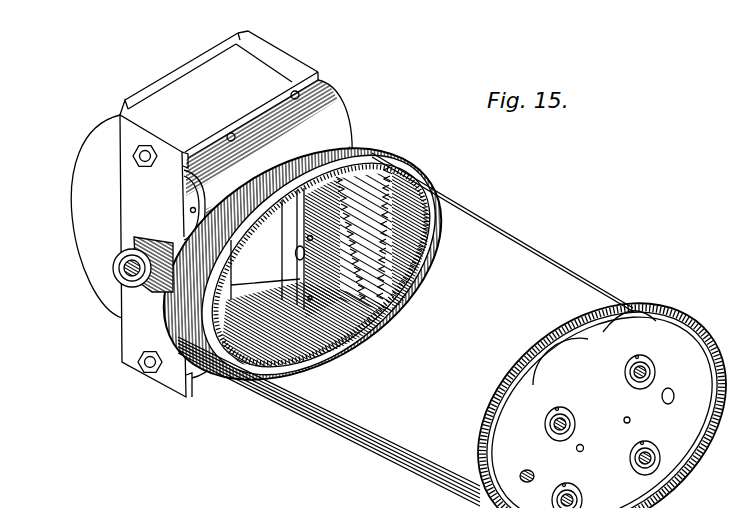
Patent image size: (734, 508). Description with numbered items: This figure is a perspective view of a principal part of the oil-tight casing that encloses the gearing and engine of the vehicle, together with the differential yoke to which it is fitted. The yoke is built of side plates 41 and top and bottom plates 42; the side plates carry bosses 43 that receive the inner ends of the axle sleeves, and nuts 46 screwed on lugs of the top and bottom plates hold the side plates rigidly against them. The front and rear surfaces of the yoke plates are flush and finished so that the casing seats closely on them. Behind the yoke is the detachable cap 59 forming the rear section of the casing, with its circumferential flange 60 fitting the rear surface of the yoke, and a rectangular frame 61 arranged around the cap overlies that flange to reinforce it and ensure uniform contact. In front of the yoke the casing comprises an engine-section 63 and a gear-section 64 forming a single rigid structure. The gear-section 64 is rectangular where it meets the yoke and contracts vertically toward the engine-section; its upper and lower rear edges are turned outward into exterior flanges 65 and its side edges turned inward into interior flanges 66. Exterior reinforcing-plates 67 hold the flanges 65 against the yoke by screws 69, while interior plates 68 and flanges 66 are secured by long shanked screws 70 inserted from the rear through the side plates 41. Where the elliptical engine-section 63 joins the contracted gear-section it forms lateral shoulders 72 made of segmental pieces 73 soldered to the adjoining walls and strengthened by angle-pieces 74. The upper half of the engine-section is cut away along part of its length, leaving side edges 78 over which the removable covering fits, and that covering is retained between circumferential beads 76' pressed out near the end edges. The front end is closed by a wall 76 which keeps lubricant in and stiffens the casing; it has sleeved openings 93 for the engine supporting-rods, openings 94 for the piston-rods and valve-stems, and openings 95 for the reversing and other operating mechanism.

The side plates 41 is at (142, 172).
The top and bottom plates 42 is at (248, 70).
The bosses 43 is at (126, 291).
The nuts 46 is at (148, 380).
The detachable cap 59 is at (72, 200).
The circumferential flange 60 is at (242, 32).
The frame 61 is at (193, 62).
The engine-section 63 is at (503, 232).
The gear-section 64 is at (269, 150).
The exterior flanges 65 is at (315, 72).
The interior flanges 66 is at (185, 185).
The exterior reinforcing-plates 67 is at (313, 82).
The interior reinforcing-plates 68 is at (192, 236).
The screws 69 is at (226, 133).
The long shanked screws 70 is at (190, 209).
The shoulders 72 is at (178, 318).
The segmental pieces 73 is at (367, 245).
The angle-pieces 74 is at (398, 275).
The wall 76 is at (583, 381).
The circumferential beads 76' is at (320, 262).
The side edges 78 is at (358, 425).
The sleeved openings 93 is at (637, 385).
The openings 94 is at (536, 475).
The openings 95 is at (622, 343).